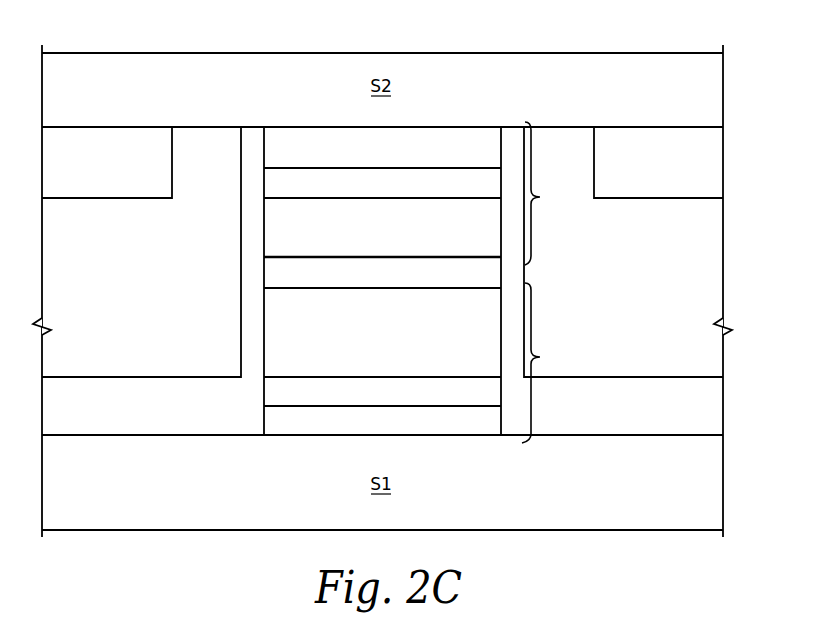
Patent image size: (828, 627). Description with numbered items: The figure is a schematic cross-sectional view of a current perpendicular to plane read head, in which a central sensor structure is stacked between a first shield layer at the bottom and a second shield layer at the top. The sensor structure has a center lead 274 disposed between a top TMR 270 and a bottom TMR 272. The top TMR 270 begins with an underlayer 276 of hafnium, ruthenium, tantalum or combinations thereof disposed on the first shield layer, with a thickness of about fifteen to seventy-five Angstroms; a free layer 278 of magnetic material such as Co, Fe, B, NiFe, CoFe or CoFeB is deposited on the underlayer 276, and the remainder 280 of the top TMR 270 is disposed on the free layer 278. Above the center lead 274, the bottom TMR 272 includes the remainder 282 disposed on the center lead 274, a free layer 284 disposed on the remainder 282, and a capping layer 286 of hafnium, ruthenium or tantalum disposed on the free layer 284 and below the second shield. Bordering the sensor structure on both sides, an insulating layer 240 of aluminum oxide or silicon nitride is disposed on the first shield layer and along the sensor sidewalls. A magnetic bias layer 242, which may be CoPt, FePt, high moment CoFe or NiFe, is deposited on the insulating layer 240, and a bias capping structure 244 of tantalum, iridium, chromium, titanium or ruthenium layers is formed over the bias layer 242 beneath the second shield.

The insulating layer 240 is at (125, 417).
The magnetic bias layer 242 is at (122, 265).
The bias capping structure 244 is at (90, 178).
The top TMR 270 is at (554, 363).
The bottom TMR 272 is at (556, 193).
The center lead 274 is at (365, 283).
The underlayer 276 is at (365, 432).
The free layer 278 is at (365, 402).
The remainder of the top TMR 280 is at (365, 347).
The remainder of the bottom TMR 282 is at (365, 240).
The free layer 284 is at (365, 193).
The capping layer 286 is at (365, 158).